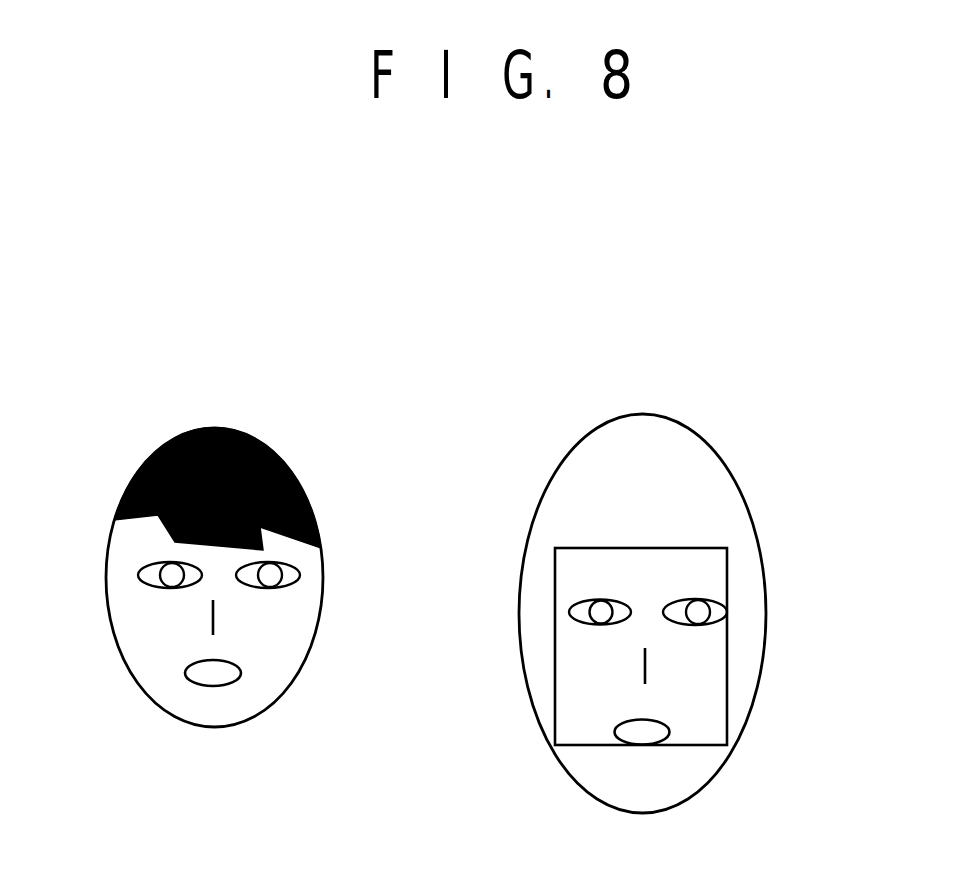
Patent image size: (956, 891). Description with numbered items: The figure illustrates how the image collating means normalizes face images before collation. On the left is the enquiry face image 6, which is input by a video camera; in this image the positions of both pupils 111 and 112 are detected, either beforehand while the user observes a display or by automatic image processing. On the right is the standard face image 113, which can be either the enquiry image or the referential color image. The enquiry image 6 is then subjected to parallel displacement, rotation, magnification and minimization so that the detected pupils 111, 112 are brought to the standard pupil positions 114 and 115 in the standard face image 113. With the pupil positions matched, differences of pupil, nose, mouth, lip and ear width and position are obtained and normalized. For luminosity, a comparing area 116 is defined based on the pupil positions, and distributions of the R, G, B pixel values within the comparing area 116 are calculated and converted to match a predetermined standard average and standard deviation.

The enquiry image 6 is at (262, 712).
The pupil 111 is at (169, 588).
The pupil 112 is at (270, 587).
The standard face image 113 is at (700, 790).
The standard pupil position 114 is at (600, 606).
The standard pupil position 115 is at (698, 606).
The comparing area 116 is at (727, 693).